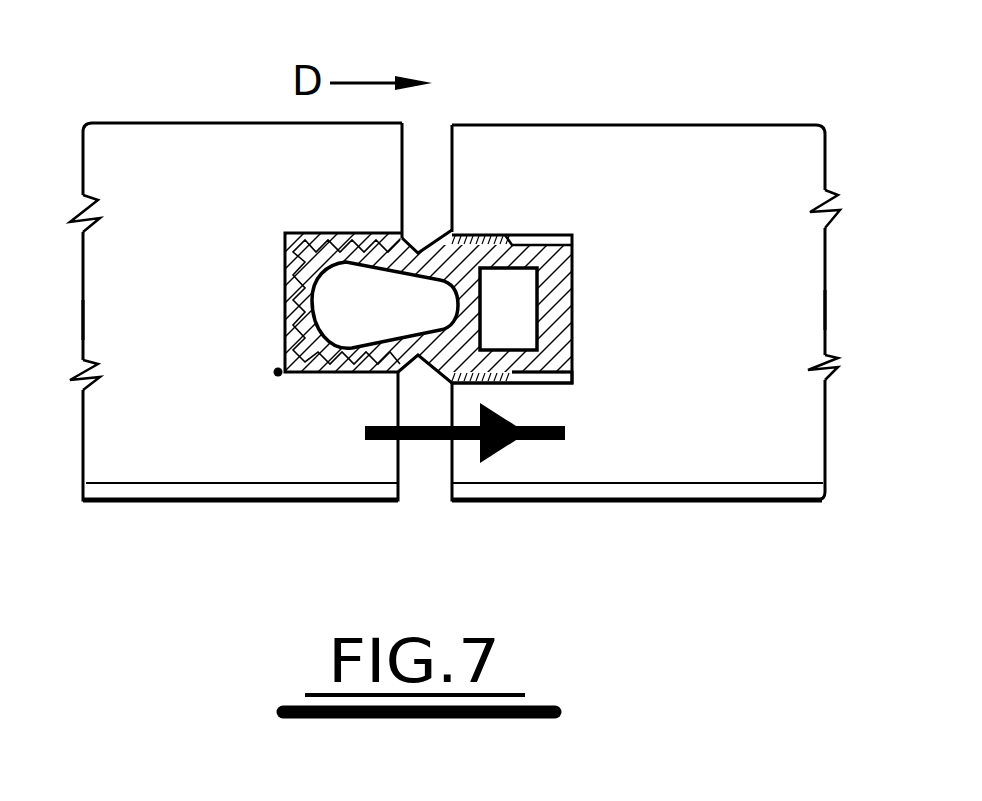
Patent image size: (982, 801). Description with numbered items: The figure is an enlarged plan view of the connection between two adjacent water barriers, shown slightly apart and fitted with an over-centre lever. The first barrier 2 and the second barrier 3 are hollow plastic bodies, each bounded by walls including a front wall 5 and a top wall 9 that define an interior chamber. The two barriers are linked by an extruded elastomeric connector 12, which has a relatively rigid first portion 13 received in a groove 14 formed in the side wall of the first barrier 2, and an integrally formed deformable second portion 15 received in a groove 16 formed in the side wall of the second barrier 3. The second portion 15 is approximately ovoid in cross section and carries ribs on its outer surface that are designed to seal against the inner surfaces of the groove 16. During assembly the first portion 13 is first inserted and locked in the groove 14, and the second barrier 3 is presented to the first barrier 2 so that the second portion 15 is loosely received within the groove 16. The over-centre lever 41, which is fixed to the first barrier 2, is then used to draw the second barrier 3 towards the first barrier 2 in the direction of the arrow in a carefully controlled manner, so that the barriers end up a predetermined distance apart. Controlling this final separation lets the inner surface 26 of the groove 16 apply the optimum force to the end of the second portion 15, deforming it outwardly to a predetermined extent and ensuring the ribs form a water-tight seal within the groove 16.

The first barrier 2 is at (690, 107).
The second barrier 3 is at (182, 108).
The front wall 5 is at (112, 490).
The top wall 9 is at (130, 380).
The connector 12 is at (471, 258).
The first portion 13 is at (548, 268).
The groove 14 is at (573, 384).
The second portion 15 is at (310, 248).
The groove 16 is at (278, 373).
The inner surface 26 is at (296, 300).
The over-centre lever 41 is at (430, 494).